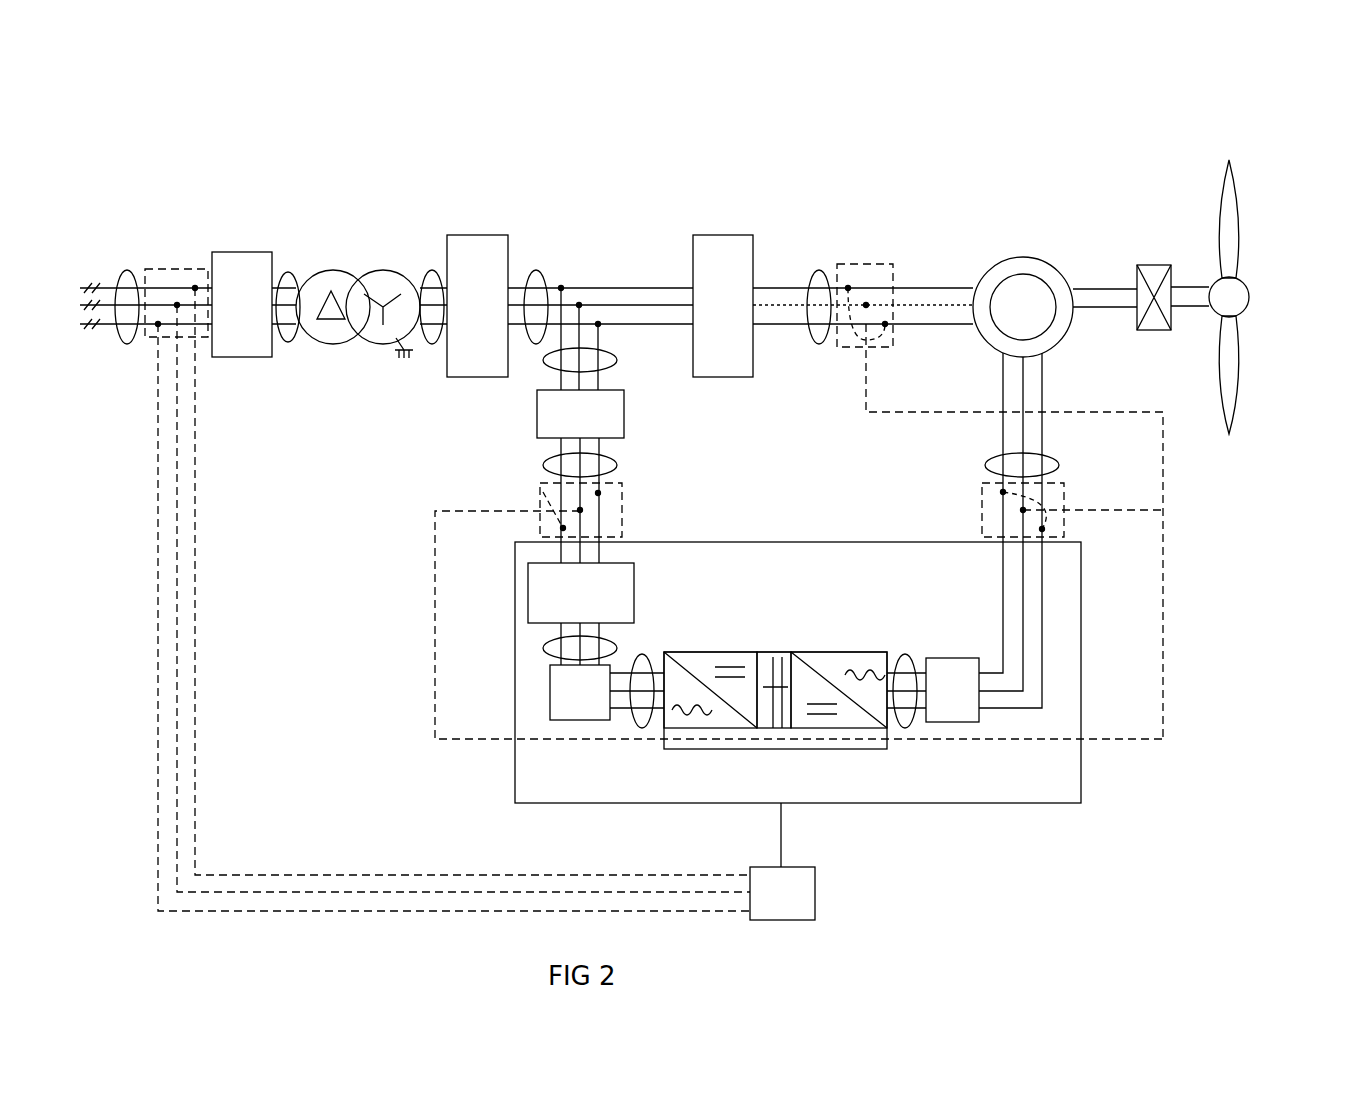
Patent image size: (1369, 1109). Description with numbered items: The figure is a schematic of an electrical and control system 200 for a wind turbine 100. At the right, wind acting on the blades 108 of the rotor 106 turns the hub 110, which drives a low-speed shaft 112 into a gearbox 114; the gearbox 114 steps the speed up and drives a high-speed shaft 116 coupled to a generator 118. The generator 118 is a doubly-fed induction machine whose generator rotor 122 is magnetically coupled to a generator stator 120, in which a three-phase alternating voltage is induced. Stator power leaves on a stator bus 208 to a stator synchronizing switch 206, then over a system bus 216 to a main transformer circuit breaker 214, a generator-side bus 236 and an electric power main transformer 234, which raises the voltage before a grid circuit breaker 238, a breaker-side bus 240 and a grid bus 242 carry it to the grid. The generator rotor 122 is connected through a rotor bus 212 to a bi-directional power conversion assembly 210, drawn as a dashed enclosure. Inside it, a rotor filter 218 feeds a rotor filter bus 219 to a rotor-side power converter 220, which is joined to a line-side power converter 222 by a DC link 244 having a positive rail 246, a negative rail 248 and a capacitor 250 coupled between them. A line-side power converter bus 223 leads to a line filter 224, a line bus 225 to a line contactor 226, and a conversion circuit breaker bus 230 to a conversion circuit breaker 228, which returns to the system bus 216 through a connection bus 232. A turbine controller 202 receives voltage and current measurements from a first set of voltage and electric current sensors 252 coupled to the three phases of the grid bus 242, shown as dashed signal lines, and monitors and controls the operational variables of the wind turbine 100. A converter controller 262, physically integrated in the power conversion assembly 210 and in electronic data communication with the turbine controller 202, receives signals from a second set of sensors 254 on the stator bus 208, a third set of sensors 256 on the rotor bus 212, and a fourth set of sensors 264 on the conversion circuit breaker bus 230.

The wind turbine 100 is at (1288, 264).
The rotor 106 is at (1258, 270).
The blades 108 is at (1240, 225).
The hub 110 is at (1250, 296).
The low-speed shaft 112 is at (1190, 287).
The gearbox 114 is at (1155, 265).
The high-speed shaft 116 is at (1100, 287).
The generator 118 is at (1036, 235).
The generator stator 120 is at (1023, 257).
The generator rotor 122 is at (1010, 280).
The electrical and control system 200 is at (183, 123).
The turbine controller 202 is at (805, 906).
The stator synchronizing switch 206 is at (723, 235).
The stator bus 208 is at (819, 270).
The power conversion assembly 210 is at (1081, 668).
The rotor bus 212 is at (1059, 466).
The main transformer circuit breaker 214 is at (478, 235).
The system bus 216 is at (536, 270).
The rotor filter 218 is at (950, 668).
The rotor filter bus 219 is at (905, 655).
The rotor-side power converter 220 is at (889, 735).
The line-side power converter 222 is at (667, 742).
The line-side power converter bus 223 is at (642, 654).
The line filter 224 is at (550, 700).
The line bus 225 is at (543, 648).
The line contactor 226 is at (528, 592).
The conversion circuit breaker 228 is at (624, 415).
The conversion circuit breaker bus 230 is at (617, 466).
The connection bus 232 is at (617, 360).
The main transformer 234 is at (376, 270).
The generator-side bus 236 is at (432, 270).
The grid circuit breaker 238 is at (237, 252).
The breaker-side bus 240 is at (288, 272).
The grid bus 242 is at (128, 270).
The DC link 244 is at (762, 648).
The positive rail 246 is at (792, 660).
The negative rail 248 is at (788, 742).
The capacitor 250 is at (772, 688).
The first set of voltage and electric current sensors 252 is at (146, 350).
The second set of voltage and electric current sensors 254 is at (881, 257).
The third set of voltage and electric current sensors 256 is at (962, 512).
The converter controller 262 is at (759, 671).
The fourth set of voltage and electric current sensors 264 is at (622, 512).